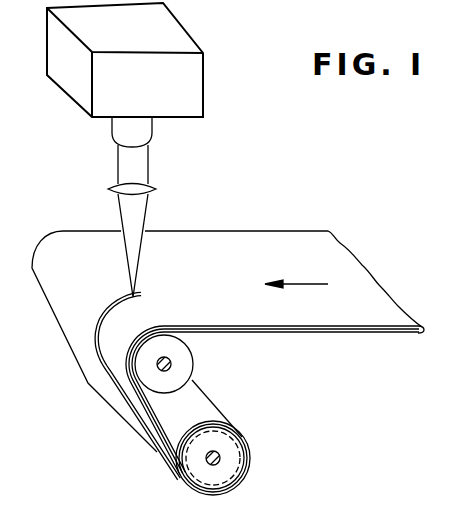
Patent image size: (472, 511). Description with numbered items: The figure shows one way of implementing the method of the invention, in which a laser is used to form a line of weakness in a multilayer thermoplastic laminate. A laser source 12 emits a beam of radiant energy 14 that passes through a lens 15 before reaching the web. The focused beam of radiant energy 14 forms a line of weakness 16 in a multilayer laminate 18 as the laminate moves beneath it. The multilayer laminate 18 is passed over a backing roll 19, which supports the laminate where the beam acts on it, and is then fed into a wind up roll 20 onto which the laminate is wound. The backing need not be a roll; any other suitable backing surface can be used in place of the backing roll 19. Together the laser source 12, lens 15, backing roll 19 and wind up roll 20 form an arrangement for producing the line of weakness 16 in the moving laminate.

The laser source 12 is at (192, 100).
The beam of radiant energy 14 is at (137, 275).
The lens 15 is at (150, 192).
The line of weakness 16 is at (98, 309).
The multilayer laminate 18 is at (278, 242).
The backing roll 19 is at (190, 362).
The wind up roll 20 is at (238, 448).